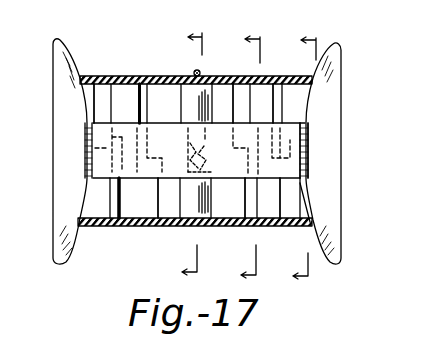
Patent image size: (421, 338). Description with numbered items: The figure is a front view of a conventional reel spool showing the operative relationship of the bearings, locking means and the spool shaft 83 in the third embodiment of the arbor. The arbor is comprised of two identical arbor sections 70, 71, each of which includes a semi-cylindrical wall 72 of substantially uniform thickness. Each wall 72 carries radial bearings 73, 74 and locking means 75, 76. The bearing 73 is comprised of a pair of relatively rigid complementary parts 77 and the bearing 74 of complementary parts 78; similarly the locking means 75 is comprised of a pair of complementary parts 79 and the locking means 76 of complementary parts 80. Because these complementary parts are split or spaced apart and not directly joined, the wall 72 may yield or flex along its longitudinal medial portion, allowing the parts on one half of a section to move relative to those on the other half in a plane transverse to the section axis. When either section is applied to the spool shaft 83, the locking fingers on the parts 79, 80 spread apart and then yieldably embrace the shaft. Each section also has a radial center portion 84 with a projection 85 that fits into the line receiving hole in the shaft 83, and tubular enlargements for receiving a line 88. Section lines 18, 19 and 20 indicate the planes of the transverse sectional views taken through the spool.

The arbor section 70 is at (103, 61).
The arbor section 71 is at (82, 230).
The semi-cylindrical wall 72 is at (313, 74).
The radial bearing 73 is at (142, 207).
The radial bearing 74 is at (274, 210).
The locking means 75 is at (127, 200).
The locking means 76 is at (242, 212).
The complementary parts 77 is at (238, 106).
The complementary parts 78 is at (100, 100).
The complementary parts 79 is at (277, 106).
The complementary parts 80 is at (140, 103).
The spool shaft 83 is at (293, 143).
The radial center portion 84 is at (190, 107).
The projection 85 is at (208, 161).
The line 88 is at (194, 70).
The section line 18- 18 is at (195, 155).
The section line 19- 19 is at (254, 158).
The section line 20- 20 is at (307, 159).